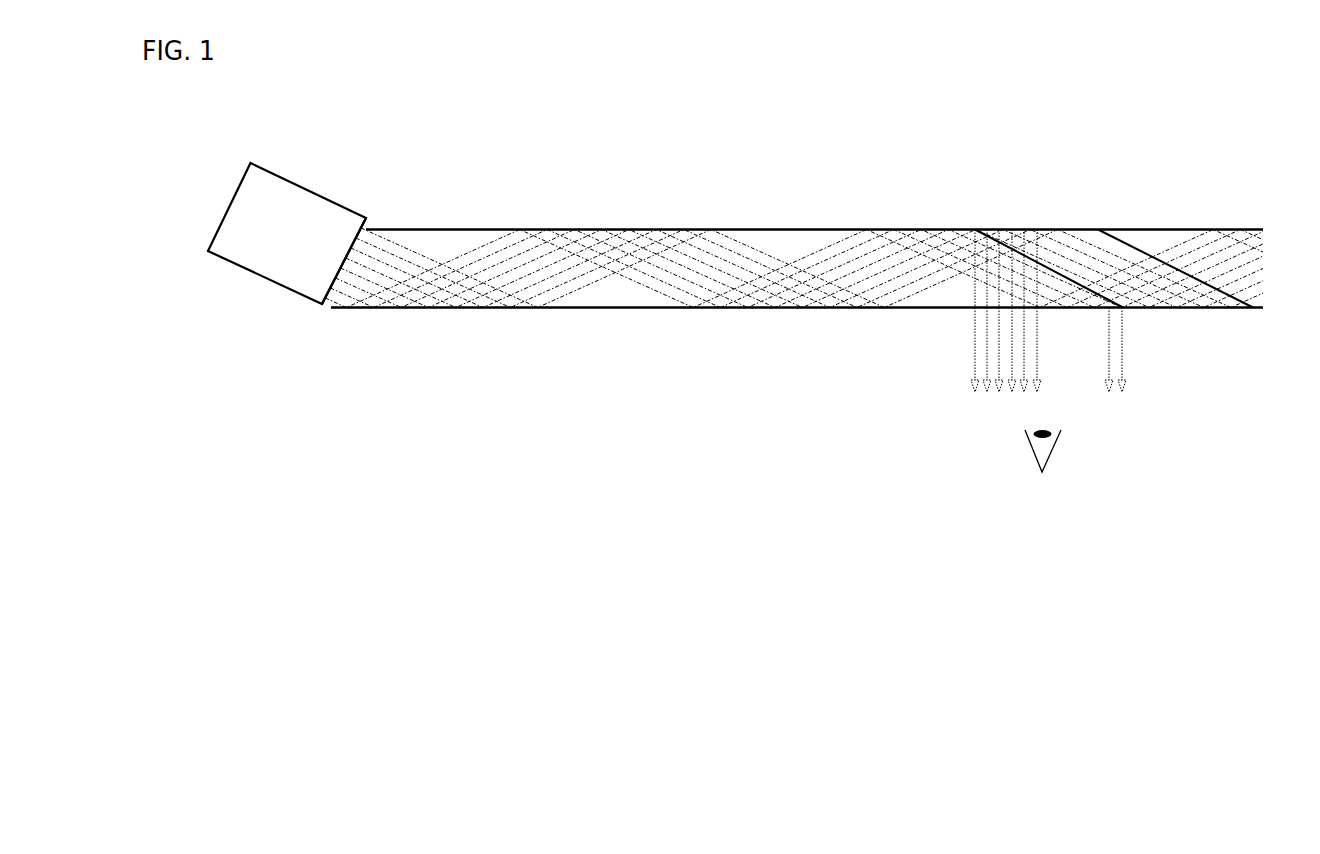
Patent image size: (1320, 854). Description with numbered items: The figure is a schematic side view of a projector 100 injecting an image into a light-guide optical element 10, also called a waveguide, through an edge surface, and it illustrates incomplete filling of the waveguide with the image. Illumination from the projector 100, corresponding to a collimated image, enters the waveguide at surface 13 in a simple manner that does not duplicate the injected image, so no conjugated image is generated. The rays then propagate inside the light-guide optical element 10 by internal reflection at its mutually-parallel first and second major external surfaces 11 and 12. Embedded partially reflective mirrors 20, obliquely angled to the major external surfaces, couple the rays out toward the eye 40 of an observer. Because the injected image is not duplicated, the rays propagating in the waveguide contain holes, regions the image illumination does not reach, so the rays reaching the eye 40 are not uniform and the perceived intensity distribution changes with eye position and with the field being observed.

The projector 100 is at (227, 215).
The light-guide optical element 10 is at (449, 244).
The first major external surface 11 is at (478, 229).
The second major external surface 12 is at (627, 309).
The injection surface 13 is at (323, 306).
The partially reflective mirrors 20 is at (1132, 236).
The eye 40 is at (1030, 445).